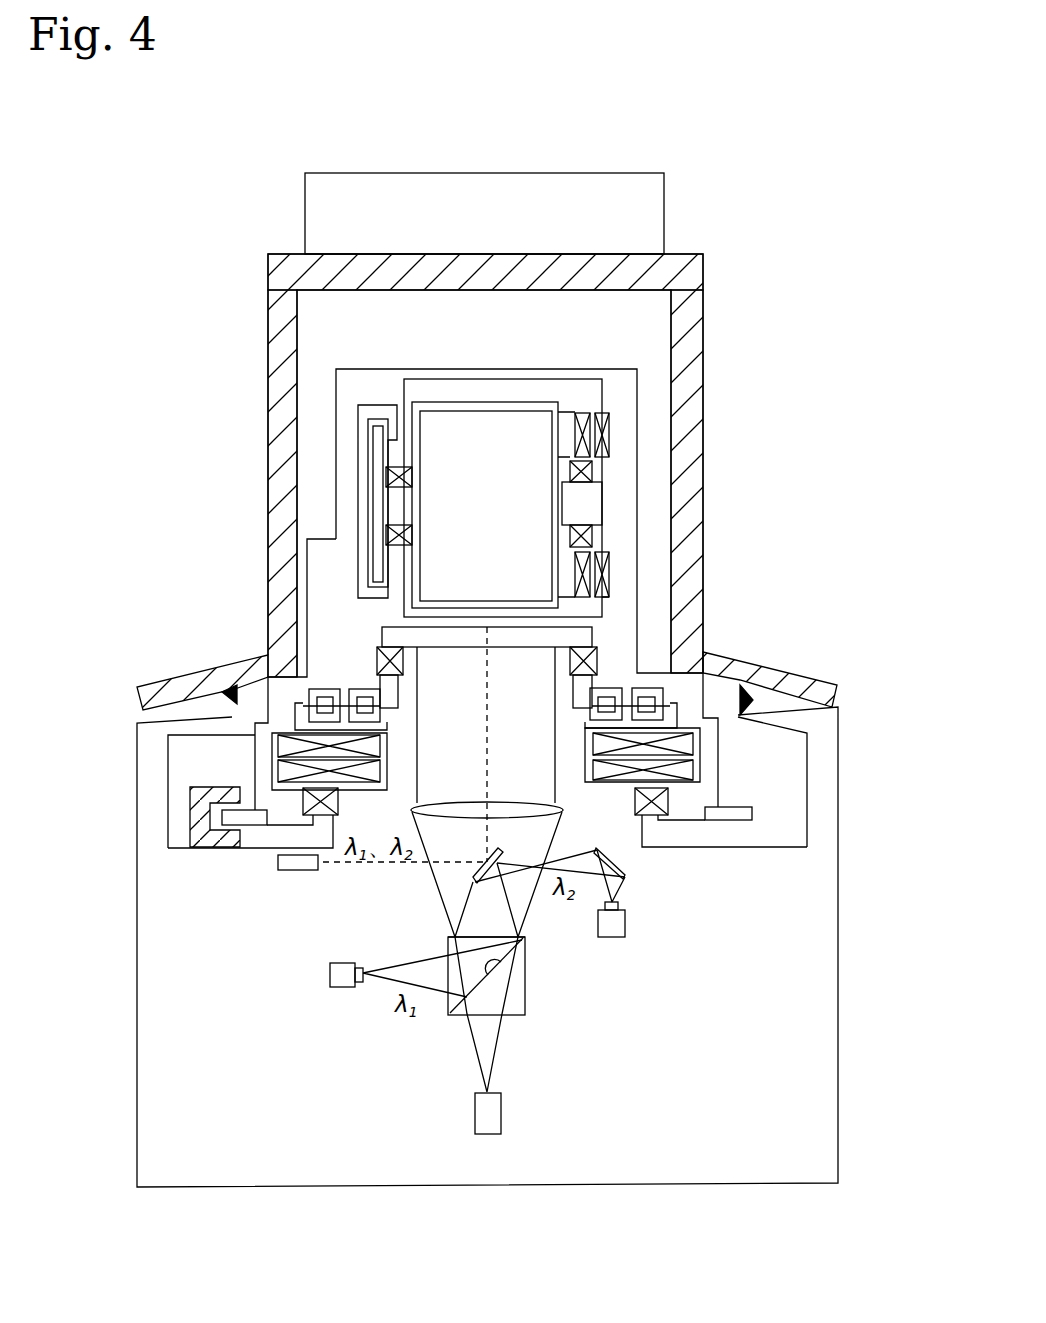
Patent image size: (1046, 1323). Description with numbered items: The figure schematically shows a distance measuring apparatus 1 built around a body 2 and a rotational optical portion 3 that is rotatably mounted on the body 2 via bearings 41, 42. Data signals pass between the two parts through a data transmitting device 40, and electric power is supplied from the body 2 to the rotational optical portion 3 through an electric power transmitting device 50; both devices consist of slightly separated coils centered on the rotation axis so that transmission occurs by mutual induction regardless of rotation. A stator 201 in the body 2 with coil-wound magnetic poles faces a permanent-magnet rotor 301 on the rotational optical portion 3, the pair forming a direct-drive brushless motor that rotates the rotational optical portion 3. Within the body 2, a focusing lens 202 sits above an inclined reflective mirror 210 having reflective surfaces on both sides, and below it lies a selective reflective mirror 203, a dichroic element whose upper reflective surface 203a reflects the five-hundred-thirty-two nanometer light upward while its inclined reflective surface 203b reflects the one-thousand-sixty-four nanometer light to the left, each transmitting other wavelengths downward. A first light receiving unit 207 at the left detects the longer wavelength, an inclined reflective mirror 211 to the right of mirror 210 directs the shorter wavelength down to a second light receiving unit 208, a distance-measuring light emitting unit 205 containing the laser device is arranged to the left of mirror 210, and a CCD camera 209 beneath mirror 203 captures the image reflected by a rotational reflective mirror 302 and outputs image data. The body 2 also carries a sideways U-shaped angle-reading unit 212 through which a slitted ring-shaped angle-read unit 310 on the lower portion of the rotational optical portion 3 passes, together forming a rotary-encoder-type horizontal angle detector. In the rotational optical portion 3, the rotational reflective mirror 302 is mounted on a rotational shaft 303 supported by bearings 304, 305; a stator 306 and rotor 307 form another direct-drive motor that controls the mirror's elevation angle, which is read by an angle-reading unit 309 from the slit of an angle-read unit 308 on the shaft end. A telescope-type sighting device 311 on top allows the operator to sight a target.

The distance measuring apparatus 1 is at (710, 203).
The body 2 is at (838, 868).
The rotational optical portion 3 is at (703, 382).
The data transmitting device 40 is at (370, 688).
The bearing 41 is at (597, 650).
The bearing 42 is at (663, 802).
The electric power transmitting device 50 is at (308, 667).
The stator 201 is at (693, 743).
The focusing lens 202 is at (523, 800).
The selective reflective mirror 203 is at (525, 998).
The reflective surface 203a is at (473, 933).
The inclined reflective surface 203b is at (492, 970).
The distance-measuring light emitting unit 205 is at (300, 872).
The first light receiving unit 207 is at (343, 988).
The second light receiving unit 208 is at (625, 925).
The CCD camera 209 is at (502, 1117).
The inclined reflective mirror 210 is at (495, 852).
The inclined reflective mirror 211 is at (625, 871).
The angle-reading unit 212 is at (193, 817).
The rotor 301 is at (810, 680).
The rotational reflective mirror 302 is at (452, 420).
The rotational shaft 303 is at (575, 505).
The bearing 304 is at (598, 470).
The bearing 305 is at (387, 477).
The stator 306 is at (618, 418).
The rotor 307 is at (587, 410).
The angle-read unit 308 is at (376, 455).
The angle-reading unit 309 is at (361, 430).
The angle-read unit 310 is at (248, 818).
The sighting device 311 is at (372, 185).